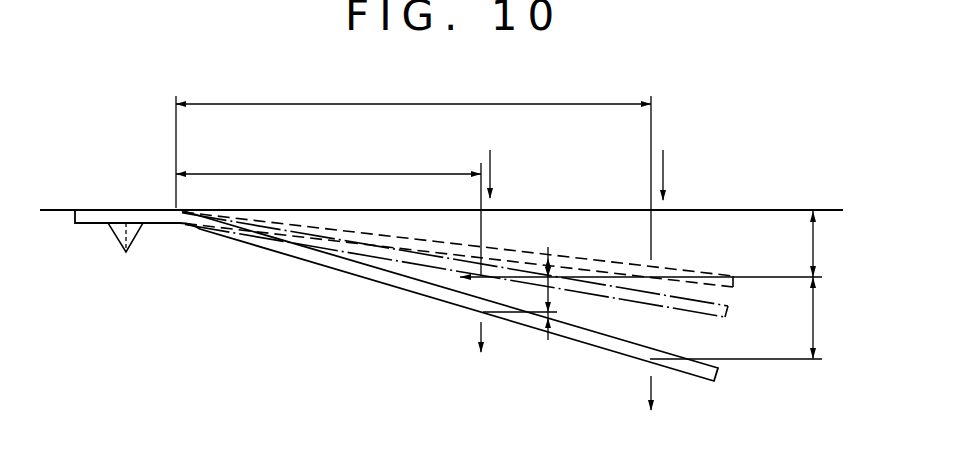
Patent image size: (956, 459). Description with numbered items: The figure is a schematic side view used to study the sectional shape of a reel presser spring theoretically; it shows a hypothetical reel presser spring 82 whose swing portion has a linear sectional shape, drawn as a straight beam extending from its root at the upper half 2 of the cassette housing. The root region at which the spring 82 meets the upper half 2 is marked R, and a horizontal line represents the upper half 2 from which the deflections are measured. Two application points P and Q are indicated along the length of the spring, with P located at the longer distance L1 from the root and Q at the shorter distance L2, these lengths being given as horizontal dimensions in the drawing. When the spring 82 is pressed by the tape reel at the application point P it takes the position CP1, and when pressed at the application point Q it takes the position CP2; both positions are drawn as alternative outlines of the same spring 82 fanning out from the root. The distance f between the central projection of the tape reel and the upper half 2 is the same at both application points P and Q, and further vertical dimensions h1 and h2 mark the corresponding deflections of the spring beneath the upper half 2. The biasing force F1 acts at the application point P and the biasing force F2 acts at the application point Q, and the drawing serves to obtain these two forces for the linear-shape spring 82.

The upper half 2 is at (774, 207).
The reel presser spring 82 is at (330, 264).
The tip / pivot point R is at (172, 203).
The position of the spring at application point P CP1 is at (677, 268).
The position of the spring at application point Q CP2 is at (705, 318).
The length L1 is at (413, 142).
The length L2 is at (328, 161).
The application point P is at (665, 178).
The application point Q is at (497, 208).
The distance between central projection and upper half f is at (645, 285).
The height h1 is at (748, 318).
The height h2 is at (520, 308).
The biasing force at application point P F1 is at (665, 396).
The biasing force at application point Q F2 is at (463, 338).